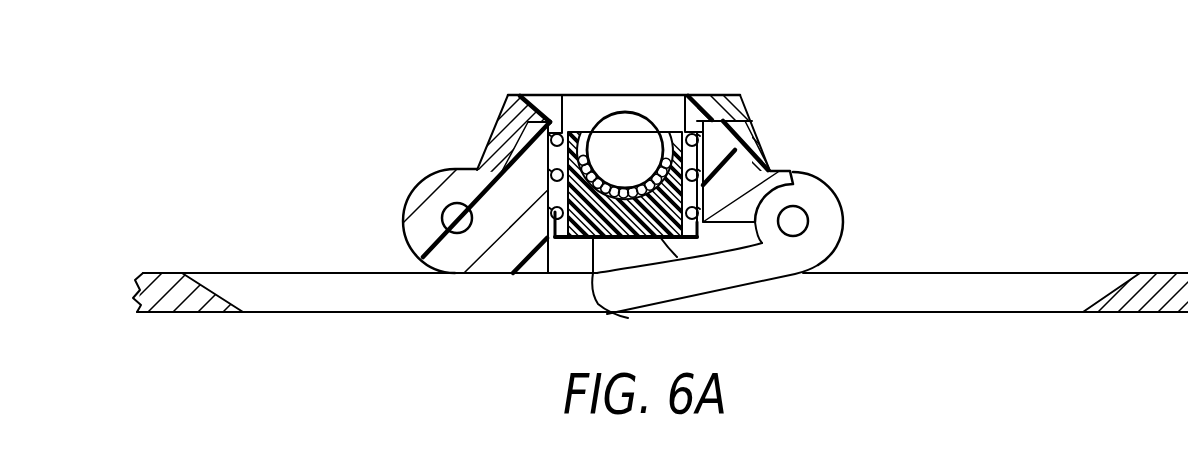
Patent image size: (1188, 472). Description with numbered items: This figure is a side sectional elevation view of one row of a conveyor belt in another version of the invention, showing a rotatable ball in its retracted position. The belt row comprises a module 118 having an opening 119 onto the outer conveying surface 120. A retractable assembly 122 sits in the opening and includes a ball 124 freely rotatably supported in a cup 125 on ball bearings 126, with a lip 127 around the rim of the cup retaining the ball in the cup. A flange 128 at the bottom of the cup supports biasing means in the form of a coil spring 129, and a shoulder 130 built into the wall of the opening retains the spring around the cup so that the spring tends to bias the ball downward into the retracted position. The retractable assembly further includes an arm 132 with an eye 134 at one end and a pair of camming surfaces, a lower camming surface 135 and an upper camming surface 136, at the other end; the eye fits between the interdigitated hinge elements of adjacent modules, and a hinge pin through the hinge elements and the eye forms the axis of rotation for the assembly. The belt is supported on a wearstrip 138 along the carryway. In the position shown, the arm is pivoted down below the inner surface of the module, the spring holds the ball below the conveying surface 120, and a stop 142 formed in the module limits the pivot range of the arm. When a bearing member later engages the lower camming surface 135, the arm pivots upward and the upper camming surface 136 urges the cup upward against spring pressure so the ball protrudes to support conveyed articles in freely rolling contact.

The module 118 is at (728, 116).
The opening 119 is at (588, 100).
The conveying surface 120 is at (538, 95).
The retractable assembly 122 is at (550, 230).
The ball 124 is at (642, 128).
The cup 125 is at (674, 237).
The ball bearings 126 is at (605, 204).
The lip 127 is at (578, 128).
The flange 128 is at (698, 234).
The coil spring 129 is at (545, 168).
The shoulder 130 is at (752, 122).
The arm 132 is at (845, 205).
The eye 134 is at (796, 222).
The lower camming surface 135 is at (628, 318).
The upper camming surface 136 is at (612, 237).
The wearstrip 138 is at (1062, 275).
The stop 142 is at (795, 172).